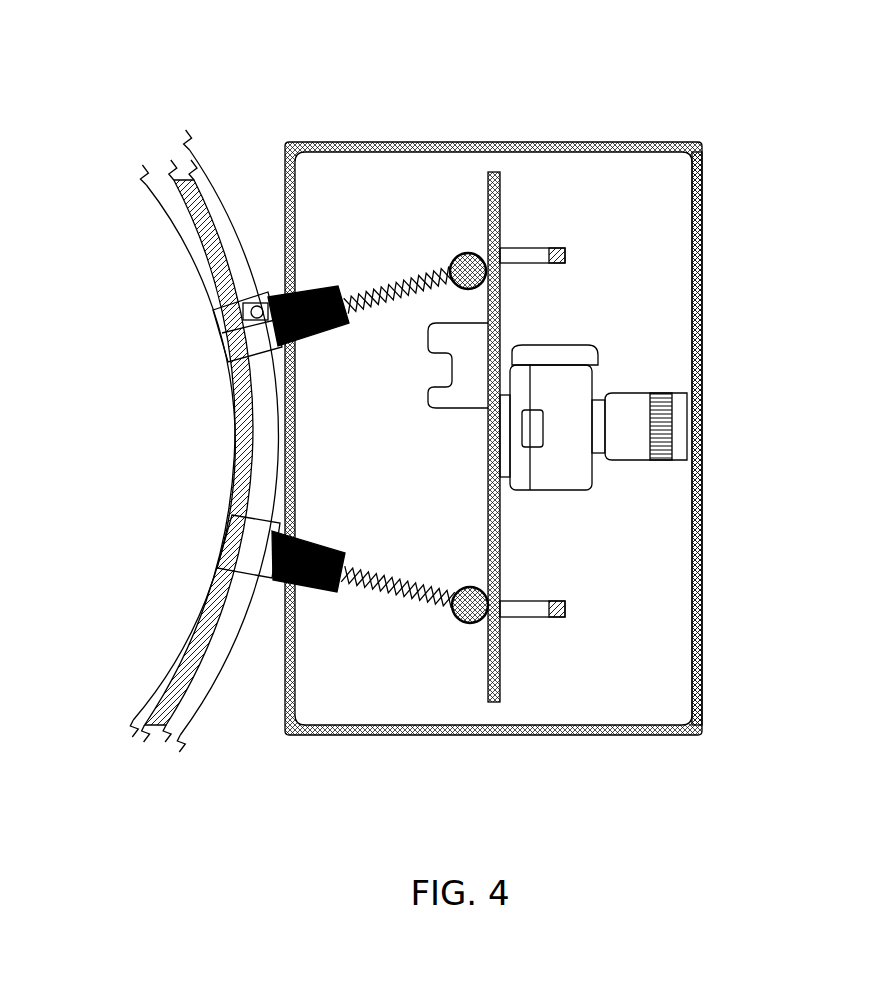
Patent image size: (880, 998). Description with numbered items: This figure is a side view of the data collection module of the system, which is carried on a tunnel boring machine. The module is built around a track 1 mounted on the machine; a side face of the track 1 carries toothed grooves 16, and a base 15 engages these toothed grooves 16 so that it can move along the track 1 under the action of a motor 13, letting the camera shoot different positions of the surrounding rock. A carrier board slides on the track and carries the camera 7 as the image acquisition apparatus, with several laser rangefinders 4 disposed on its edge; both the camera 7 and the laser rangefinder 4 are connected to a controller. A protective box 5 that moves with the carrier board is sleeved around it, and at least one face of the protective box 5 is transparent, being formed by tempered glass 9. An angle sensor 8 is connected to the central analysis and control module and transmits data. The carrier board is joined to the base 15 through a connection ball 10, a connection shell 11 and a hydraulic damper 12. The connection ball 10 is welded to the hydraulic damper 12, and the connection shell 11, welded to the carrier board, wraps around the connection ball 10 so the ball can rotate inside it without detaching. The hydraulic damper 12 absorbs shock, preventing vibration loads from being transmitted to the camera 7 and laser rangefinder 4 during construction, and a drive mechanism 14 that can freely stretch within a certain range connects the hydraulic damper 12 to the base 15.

The track 1 is at (185, 675).
The laser rangefinder 4 is at (565, 250).
The protective box 5 is at (358, 142).
The camera 7 is at (632, 433).
The angle sensor 8 is at (470, 356).
The tempered glass 9 is at (700, 316).
The connection ball 10 is at (463, 625).
The connection shell 11 is at (497, 655).
The hydraulic damper 12 is at (385, 595).
The motor 13 is at (227, 337).
The drive mechanism 14 is at (263, 298).
The base 15 is at (262, 532).
The toothed groove 16 is at (211, 598).